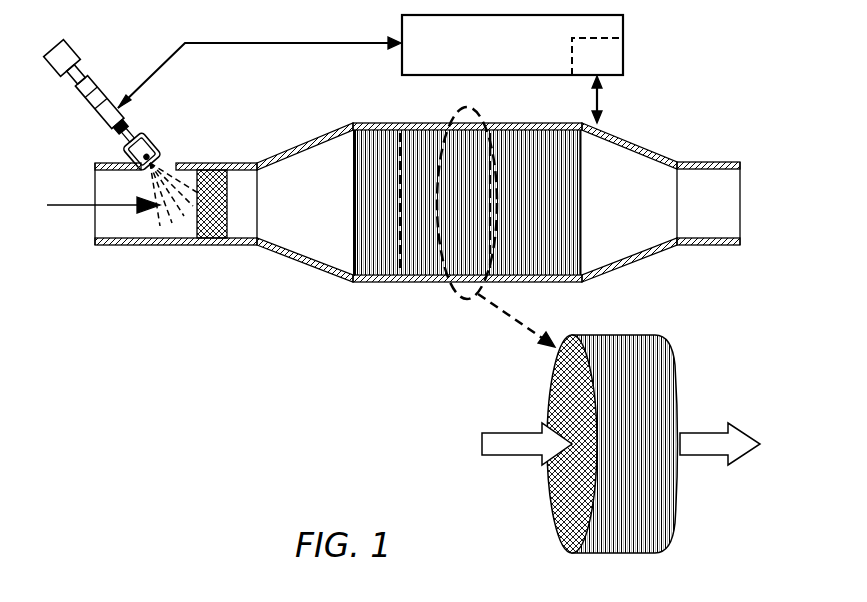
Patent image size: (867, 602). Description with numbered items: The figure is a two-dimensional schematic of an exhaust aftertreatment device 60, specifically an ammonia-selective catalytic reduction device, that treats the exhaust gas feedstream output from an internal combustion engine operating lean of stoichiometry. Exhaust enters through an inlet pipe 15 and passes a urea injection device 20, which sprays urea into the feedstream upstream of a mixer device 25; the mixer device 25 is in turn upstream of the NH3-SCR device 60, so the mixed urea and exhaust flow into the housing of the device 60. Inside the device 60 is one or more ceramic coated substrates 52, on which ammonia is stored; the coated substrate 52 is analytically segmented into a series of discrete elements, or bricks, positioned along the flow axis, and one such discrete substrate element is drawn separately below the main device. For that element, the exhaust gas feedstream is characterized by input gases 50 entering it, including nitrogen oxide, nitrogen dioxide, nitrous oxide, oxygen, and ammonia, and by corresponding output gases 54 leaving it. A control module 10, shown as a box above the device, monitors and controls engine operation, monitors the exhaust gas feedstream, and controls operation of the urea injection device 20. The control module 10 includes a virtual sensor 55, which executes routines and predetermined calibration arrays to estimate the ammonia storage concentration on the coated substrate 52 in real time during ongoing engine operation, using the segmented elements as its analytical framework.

The control module 10 is at (512, 45).
The exhaust inlet pipe 15 is at (75, 205).
The urea injection device 20 is at (88, 80).
The mixer device 25 is at (217, 178).
The input gases 50 is at (508, 444).
The coated substrate 52 is at (375, 237).
The output gases 54 is at (709, 445).
The virtual sensor 55 is at (597, 80).
The exhaust aftertreatment device 60 is at (377, 290).